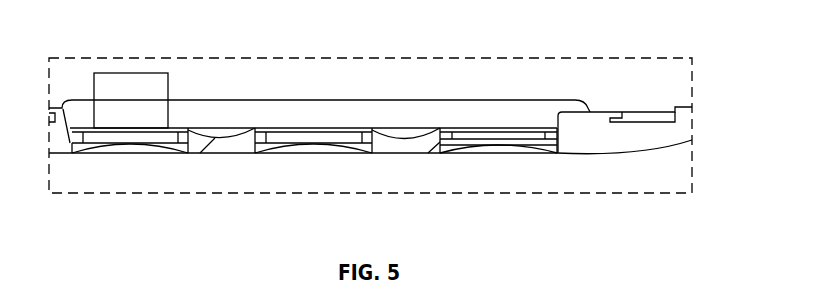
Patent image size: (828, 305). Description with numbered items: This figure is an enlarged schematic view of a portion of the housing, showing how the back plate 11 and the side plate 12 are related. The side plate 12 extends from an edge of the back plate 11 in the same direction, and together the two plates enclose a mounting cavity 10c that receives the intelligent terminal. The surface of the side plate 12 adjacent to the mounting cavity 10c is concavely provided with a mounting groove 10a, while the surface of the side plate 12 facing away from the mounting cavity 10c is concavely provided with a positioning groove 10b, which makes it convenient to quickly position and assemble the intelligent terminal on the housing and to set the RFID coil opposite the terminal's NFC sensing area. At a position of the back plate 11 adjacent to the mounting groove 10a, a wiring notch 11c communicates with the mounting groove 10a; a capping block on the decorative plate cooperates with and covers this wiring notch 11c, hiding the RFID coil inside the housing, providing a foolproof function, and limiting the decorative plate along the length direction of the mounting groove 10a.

The back plate 11 is at (571, 85).
The wiring notch 11c is at (128, 88).
The mounting groove 10a is at (242, 120).
The positioning groove 10b is at (499, 146).
The mounting cavity 10c is at (404, 135).
The side plate 12 is at (637, 147).